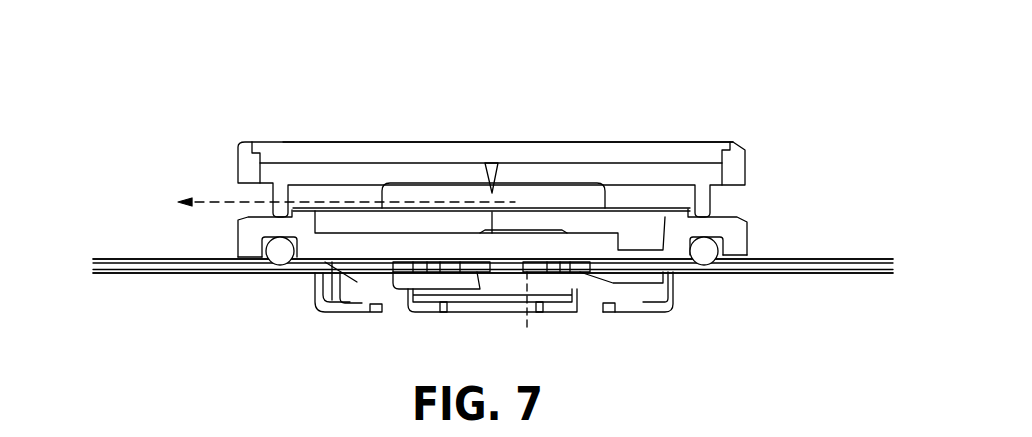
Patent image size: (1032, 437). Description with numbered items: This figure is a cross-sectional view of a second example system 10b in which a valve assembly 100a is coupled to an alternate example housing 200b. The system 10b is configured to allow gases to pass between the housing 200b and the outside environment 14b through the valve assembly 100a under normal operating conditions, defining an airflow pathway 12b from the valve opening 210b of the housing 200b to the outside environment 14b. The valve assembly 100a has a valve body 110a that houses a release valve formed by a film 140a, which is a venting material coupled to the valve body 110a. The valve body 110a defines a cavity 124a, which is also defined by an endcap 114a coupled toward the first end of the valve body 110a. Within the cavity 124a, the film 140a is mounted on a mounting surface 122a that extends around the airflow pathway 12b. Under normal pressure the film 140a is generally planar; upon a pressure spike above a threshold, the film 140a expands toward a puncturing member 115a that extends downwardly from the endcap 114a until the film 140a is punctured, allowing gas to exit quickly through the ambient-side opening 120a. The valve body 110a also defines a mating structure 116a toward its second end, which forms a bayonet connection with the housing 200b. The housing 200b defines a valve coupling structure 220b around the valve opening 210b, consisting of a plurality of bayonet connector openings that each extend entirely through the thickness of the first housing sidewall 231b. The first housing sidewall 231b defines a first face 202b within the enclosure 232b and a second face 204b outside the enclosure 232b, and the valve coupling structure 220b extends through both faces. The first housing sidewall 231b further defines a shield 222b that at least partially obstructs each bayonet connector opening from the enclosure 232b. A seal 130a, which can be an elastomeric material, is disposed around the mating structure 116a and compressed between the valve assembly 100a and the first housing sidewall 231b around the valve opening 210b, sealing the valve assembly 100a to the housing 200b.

The system 10b is at (176, 55).
The valve assembly 100a is at (256, 118).
The valve body 110a is at (283, 142).
The cavity 124a is at (333, 178).
The puncturing member 115a is at (487, 175).
The ambient-side opening 120a is at (547, 193).
The endcap 114a is at (645, 150).
The outside environment 14b is at (808, 101).
The film 140a is at (618, 210).
The mounting surface 122a is at (672, 210).
The second face 204b is at (129, 250).
The airflow pathway 12b is at (232, 203).
The first face 202b is at (158, 282).
The housing 200b is at (777, 260).
The seal 130a is at (703, 265).
The first housing sidewall 231b is at (807, 267).
The enclosure 232b is at (763, 365).
The valve coupling structure 220b is at (330, 260).
The shield 222b is at (350, 310).
The mating structure 116a is at (343, 285).
The valve opening 210b is at (547, 268).